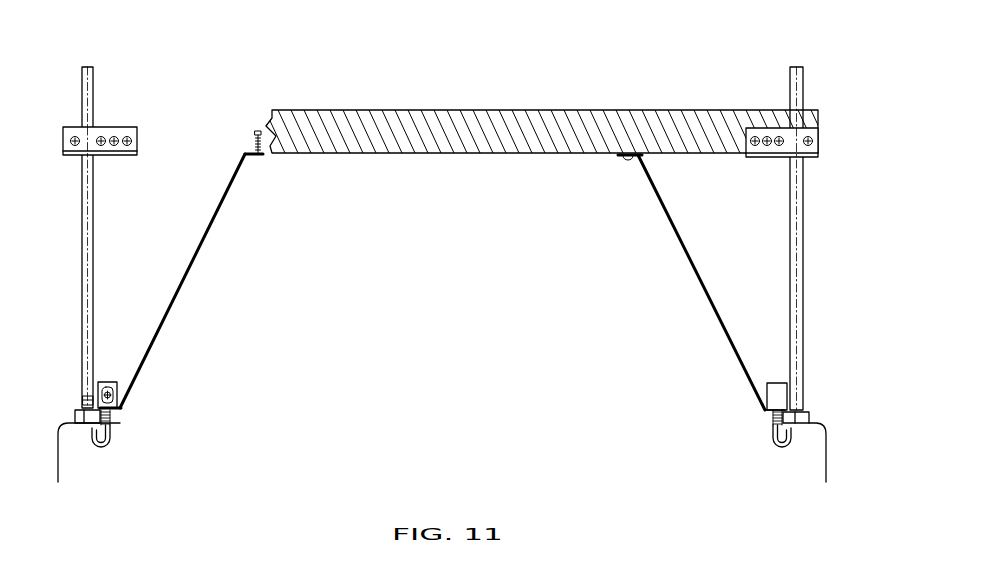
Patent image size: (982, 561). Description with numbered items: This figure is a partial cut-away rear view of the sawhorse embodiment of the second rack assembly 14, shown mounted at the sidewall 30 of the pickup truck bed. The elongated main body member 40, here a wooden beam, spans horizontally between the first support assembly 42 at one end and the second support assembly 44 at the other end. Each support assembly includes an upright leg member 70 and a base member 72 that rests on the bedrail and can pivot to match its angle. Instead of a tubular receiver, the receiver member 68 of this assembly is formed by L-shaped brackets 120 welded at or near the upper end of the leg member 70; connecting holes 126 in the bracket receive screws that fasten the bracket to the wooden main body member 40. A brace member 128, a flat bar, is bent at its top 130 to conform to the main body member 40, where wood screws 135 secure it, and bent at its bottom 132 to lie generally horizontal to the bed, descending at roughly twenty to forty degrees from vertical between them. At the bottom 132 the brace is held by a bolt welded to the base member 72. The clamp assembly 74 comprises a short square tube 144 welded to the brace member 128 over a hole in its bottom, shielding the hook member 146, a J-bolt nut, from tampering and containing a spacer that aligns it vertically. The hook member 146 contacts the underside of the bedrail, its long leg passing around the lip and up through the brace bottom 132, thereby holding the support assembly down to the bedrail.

The second rack assembly 14 is at (497, 73).
The sidewall 30 is at (820, 462).
The main body member 40 is at (462, 142).
The first support assembly 42 is at (67, 291).
The second support assembly 44 is at (812, 278).
The receiver member 68 is at (105, 123).
The leg member 70 is at (797, 222).
The base member 72 is at (67, 418).
The clamp assembly 74 is at (107, 375).
The L-shaped bracket 120 is at (133, 132).
The connecting hole 126 is at (115, 147).
The brace member 128 is at (212, 227).
The top of brace member 130 is at (252, 163).
The bottom of brace member 132 is at (135, 402).
The wood screw 135 is at (258, 130).
The short square tube 144 is at (773, 395).
The hook member 146 is at (773, 443).